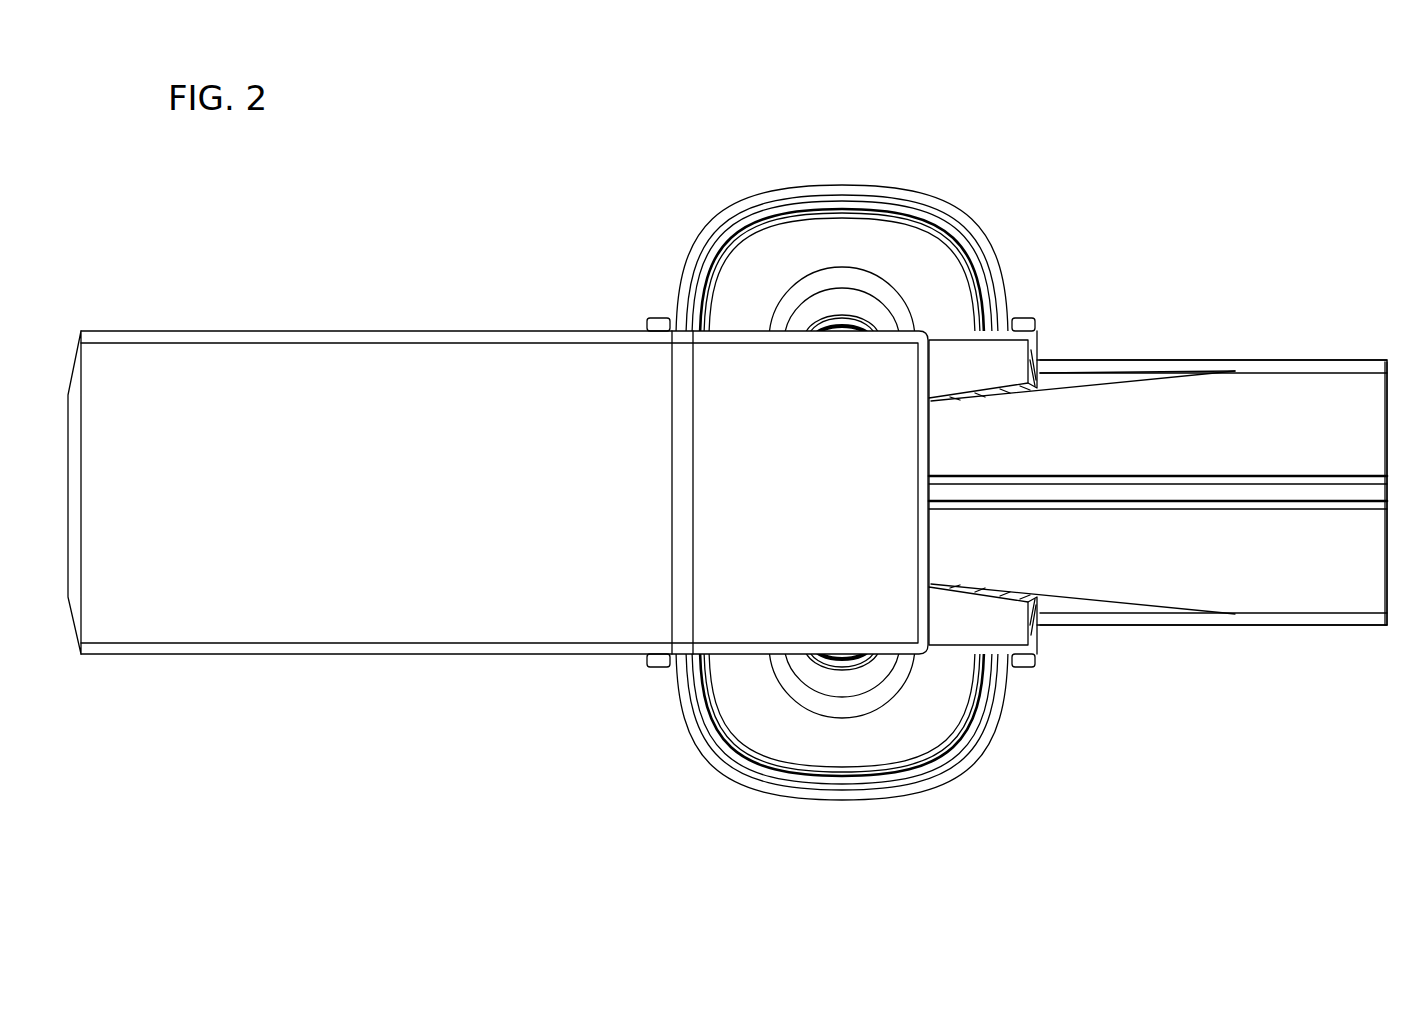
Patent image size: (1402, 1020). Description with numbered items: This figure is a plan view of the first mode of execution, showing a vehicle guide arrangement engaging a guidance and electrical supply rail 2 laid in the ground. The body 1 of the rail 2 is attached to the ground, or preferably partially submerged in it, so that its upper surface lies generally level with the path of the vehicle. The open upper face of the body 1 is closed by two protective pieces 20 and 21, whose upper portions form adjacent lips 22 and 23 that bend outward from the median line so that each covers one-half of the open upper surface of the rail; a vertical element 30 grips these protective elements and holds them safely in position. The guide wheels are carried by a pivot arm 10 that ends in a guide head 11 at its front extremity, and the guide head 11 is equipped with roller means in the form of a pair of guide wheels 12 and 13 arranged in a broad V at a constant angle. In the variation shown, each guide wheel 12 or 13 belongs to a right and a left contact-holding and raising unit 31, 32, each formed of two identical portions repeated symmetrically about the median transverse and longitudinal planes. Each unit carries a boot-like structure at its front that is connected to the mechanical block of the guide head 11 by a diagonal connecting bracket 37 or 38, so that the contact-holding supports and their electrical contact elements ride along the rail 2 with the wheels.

The body 1 is at (1352, 648).
The guidance and electrical supply rail 2 is at (1278, 660).
The pivot arm 10 is at (628, 272).
The guide head 11 is at (934, 180).
The guide wheel 12 is at (722, 762).
The guide wheel 13 is at (757, 222).
The protective piece 20 is at (1234, 573).
The protective piece 21 is at (1220, 410).
The lip 22 is at (1095, 560).
The lip 23 is at (1105, 410).
The vertical element 30 is at (1293, 492).
The right contact-holding and raising unit 31 is at (948, 665).
The left contact-holding and raising unit 32 is at (947, 318).
The diagonal connecting bracket 37 is at (1033, 622).
The diagonal connecting bracket 38 is at (981, 362).